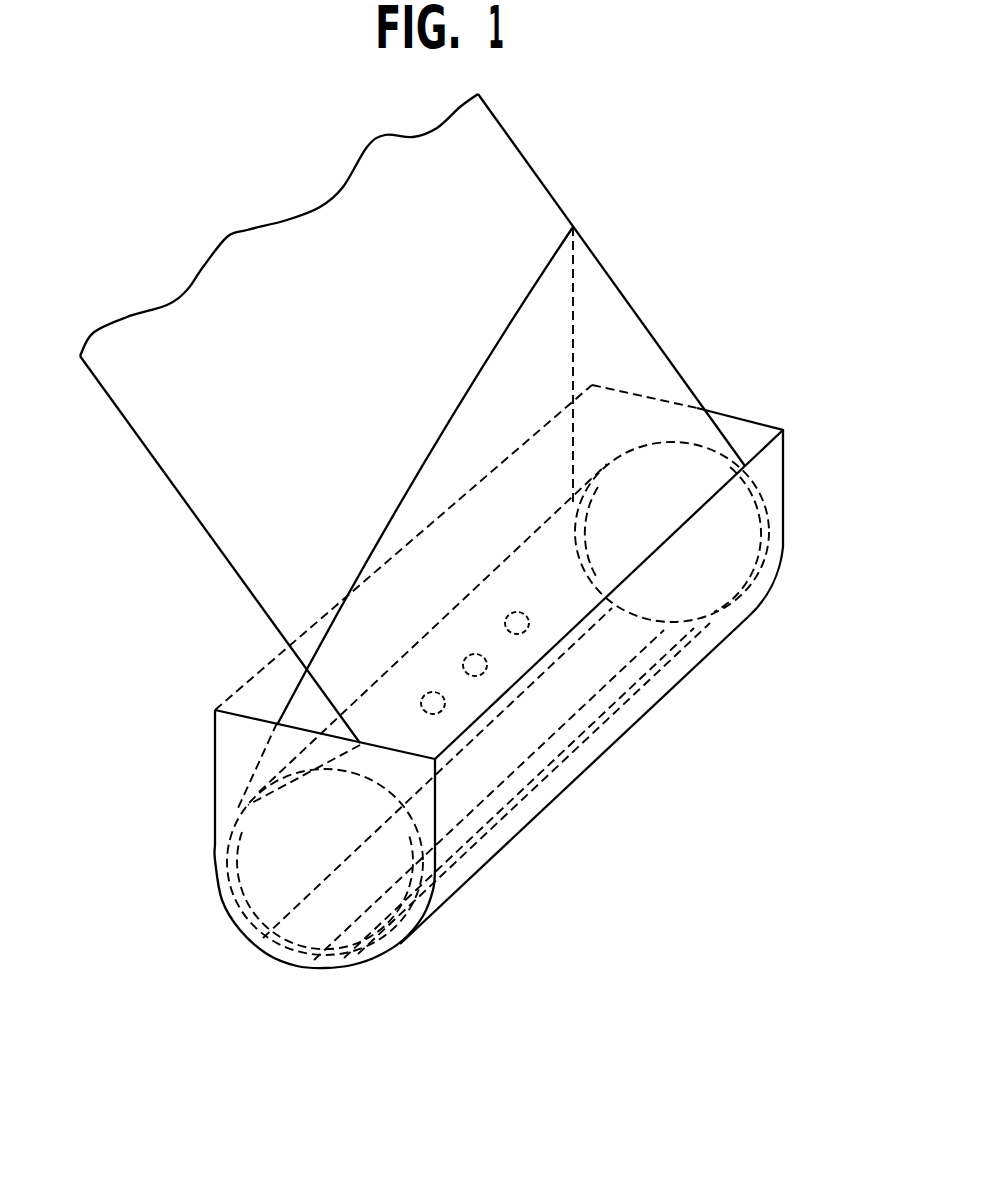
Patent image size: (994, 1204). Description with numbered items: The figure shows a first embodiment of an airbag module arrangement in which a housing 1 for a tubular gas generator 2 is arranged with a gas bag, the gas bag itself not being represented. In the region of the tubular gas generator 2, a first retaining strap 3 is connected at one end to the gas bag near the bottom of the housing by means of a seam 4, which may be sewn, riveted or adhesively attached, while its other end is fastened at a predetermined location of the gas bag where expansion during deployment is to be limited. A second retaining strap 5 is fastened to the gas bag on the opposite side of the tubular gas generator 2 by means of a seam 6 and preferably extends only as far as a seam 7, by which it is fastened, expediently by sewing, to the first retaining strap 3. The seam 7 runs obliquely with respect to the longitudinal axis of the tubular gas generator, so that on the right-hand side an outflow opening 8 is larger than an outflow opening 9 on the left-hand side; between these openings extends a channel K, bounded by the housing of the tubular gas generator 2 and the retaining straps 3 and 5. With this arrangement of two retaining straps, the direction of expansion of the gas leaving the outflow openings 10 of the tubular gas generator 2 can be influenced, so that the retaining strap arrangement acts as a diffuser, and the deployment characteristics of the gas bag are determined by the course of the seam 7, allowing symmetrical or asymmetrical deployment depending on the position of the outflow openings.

The housing 1 is at (215, 787).
The tubular gas generator 2 is at (708, 553).
The first retaining strap 3 is at (217, 555).
The seam 4 is at (240, 932).
The second retaining strap 5 is at (632, 307).
The seam 6 is at (370, 970).
The seam 7 is at (535, 287).
The outflow opening 8 is at (637, 365).
The outflow opening 9 is at (300, 712).
The outflow openings 10 is at (527, 632).
The channel K is at (648, 430).